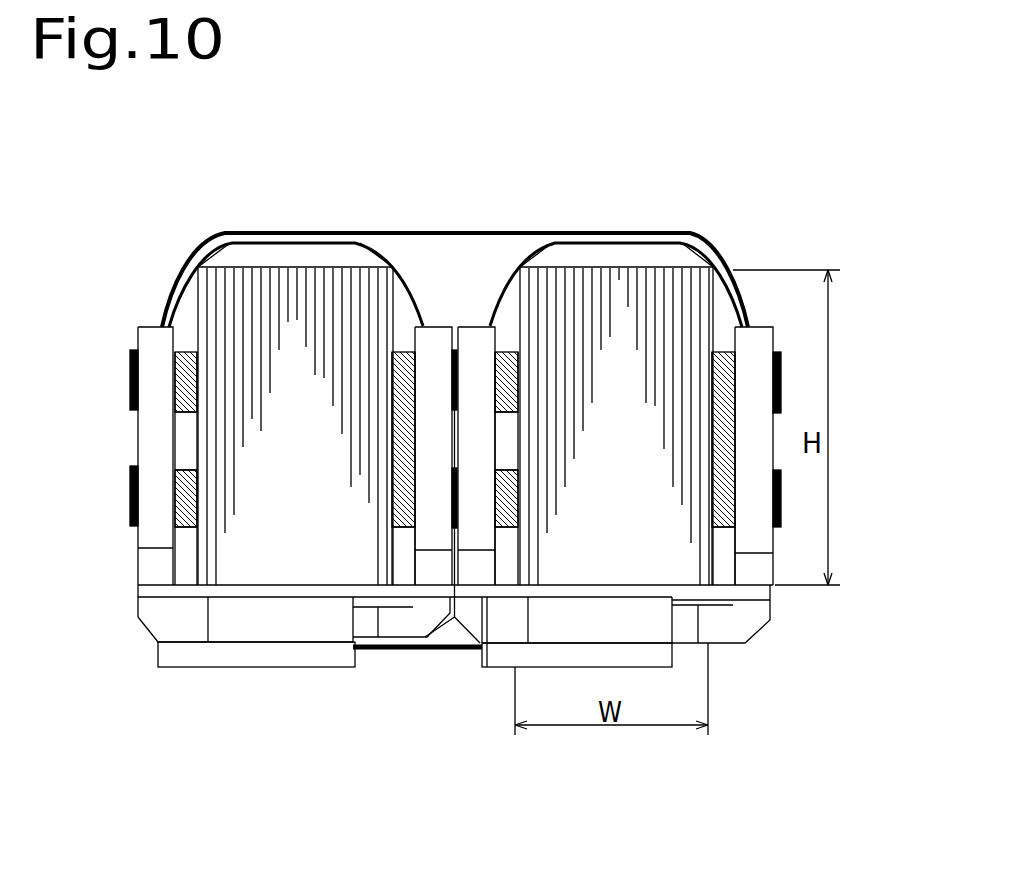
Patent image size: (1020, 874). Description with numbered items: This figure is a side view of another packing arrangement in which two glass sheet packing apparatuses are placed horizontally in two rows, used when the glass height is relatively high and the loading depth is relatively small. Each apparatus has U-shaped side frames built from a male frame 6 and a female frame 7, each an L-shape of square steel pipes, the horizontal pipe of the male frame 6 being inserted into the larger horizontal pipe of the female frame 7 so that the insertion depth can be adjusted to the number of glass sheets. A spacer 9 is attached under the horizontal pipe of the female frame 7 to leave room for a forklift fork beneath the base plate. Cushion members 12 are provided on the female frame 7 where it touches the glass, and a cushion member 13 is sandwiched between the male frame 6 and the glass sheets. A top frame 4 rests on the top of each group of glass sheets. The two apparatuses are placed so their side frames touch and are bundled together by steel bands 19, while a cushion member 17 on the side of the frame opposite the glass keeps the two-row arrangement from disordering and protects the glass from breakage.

The top frame 4 is at (285, 250).
The male frame 6 is at (767, 343).
The female frame 7 is at (473, 338).
The spacer 9 is at (490, 660).
The cushion member 12 is at (512, 374).
The cushion member 13 is at (738, 368).
The cushion member 17 is at (452, 493).
The steel band 19 is at (407, 232).